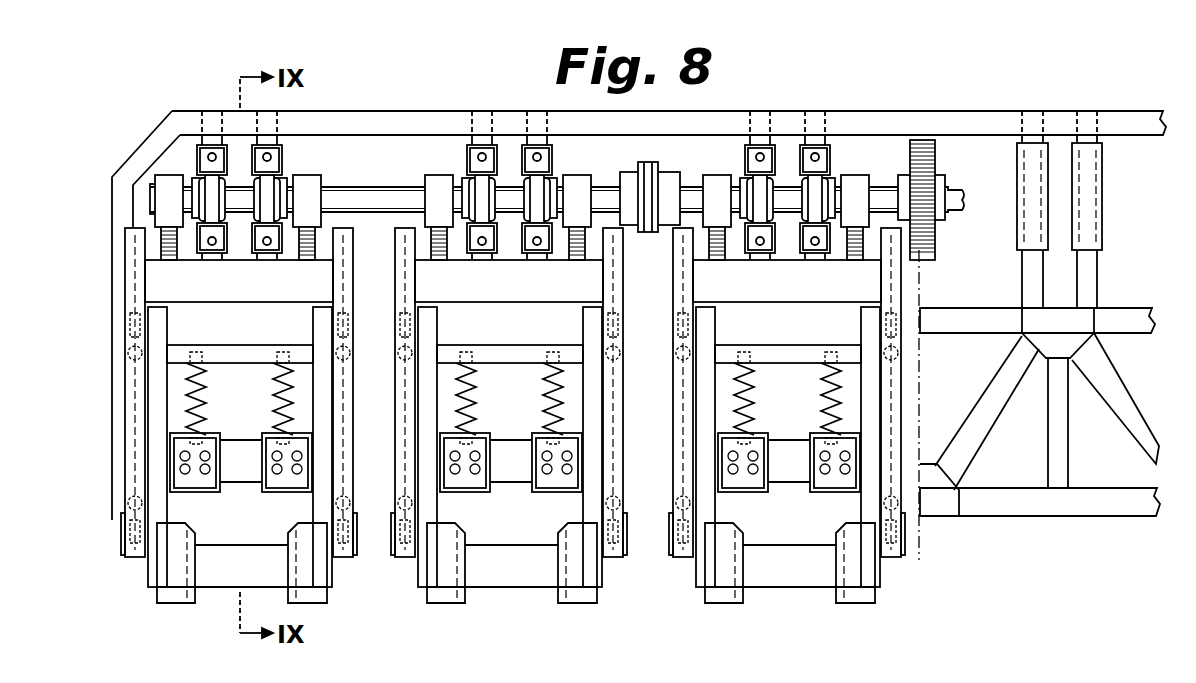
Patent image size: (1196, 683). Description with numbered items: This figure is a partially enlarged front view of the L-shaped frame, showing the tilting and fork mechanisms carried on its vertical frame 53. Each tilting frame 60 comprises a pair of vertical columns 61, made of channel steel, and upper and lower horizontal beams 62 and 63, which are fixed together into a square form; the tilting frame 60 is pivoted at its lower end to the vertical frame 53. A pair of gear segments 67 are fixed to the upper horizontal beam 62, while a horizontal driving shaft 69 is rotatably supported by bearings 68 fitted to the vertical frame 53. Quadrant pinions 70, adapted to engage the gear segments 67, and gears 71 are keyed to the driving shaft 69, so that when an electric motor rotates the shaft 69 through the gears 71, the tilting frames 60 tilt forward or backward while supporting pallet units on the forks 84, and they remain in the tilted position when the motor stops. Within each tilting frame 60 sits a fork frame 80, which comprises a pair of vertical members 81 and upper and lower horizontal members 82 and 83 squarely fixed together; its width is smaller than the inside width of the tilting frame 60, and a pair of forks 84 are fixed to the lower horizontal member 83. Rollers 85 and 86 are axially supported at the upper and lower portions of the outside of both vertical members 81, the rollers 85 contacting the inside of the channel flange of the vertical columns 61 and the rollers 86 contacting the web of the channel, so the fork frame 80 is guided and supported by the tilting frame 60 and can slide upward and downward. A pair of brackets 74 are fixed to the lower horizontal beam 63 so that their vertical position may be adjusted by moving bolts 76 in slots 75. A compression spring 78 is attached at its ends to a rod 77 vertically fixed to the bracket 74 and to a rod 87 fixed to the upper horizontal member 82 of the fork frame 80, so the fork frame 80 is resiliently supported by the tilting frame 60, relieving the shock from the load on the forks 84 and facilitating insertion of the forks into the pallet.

The vertical frame 53 is at (931, 118).
The quadrant pinion 70 is at (163, 176).
The gear segment 67 is at (153, 256).
The bearing 68 is at (269, 185).
The horizontal driving shaft 69 is at (380, 187).
The gear 71 is at (935, 150).
The tilting frame 60 is at (133, 294).
The vertical column 61 is at (229, 392).
The upper horizontal beam 62 is at (239, 303).
The lower horizontal beam 63 is at (242, 482).
The bracket 74 is at (157, 490).
The slot 75 is at (241, 451).
The bolt 76 is at (241, 499).
The rod 77 is at (290, 445).
The compression spring 78 is at (239, 399).
The fork frame 80 is at (280, 455).
The vertical member 81 is at (229, 447).
The upper horizontal member 82 is at (240, 336).
The lower horizontal member 83 is at (241, 593).
The fork 84 is at (235, 576).
The roller 85 is at (211, 438).
The roller 86 is at (207, 430).
The rod 87 is at (250, 336).